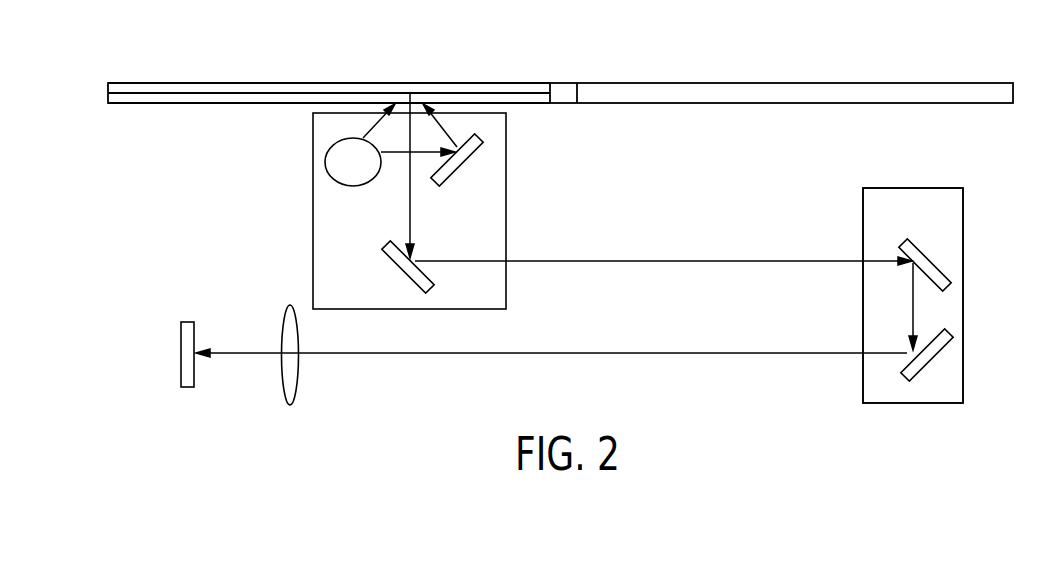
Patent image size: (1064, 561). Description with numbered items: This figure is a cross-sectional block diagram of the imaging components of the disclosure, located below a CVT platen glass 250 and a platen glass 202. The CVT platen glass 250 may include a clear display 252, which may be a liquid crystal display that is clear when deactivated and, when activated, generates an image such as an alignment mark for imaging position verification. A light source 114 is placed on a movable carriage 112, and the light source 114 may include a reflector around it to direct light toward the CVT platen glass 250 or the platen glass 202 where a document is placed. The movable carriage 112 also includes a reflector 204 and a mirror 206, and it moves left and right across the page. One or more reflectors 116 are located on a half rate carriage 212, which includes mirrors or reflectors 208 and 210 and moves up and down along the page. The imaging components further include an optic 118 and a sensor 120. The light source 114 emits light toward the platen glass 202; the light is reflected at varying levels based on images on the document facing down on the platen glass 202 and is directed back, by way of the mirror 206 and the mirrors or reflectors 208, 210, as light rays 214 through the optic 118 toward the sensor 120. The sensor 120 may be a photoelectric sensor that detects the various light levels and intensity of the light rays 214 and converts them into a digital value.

The movable carriage 112 is at (313, 212).
The light source 114 is at (367, 174).
The reflectors 116 is at (965, 297).
The optic 118 is at (297, 377).
The sensor 120 is at (180, 365).
The platen glass 202 is at (785, 83).
The reflector 204 is at (471, 157).
The mirror 206 is at (393, 263).
The mirror or reflector 208 is at (940, 270).
The mirror or reflector 210 is at (948, 345).
The half rate carriage 212 is at (913, 187).
The light rays 214 is at (635, 353).
The CVT platen glass 250 is at (353, 90).
The clear display 252 is at (157, 100).